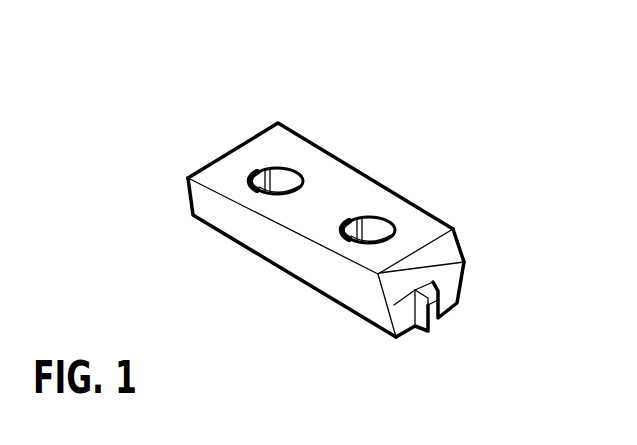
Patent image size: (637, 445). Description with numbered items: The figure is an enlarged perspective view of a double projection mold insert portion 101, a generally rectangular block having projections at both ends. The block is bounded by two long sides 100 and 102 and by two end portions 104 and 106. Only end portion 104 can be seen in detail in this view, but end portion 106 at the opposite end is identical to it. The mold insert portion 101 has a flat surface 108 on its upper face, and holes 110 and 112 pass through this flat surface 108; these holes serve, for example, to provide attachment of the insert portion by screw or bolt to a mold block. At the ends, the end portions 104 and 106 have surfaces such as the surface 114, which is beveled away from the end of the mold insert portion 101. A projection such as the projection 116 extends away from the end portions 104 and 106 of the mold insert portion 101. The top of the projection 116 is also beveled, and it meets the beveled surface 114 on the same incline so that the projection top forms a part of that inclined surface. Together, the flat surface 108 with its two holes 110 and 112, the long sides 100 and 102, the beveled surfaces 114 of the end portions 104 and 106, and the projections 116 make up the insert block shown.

The long side 100 is at (375, 185).
The double projection mold insert portion 101 is at (411, 190).
The long side 102 is at (315, 270).
The end portion 104 is at (468, 279).
The end portion 106 is at (217, 151).
The flat surface 108 is at (323, 173).
The hole 110 is at (280, 190).
The hole 112 is at (374, 244).
The beveled surface 114 is at (442, 255).
The projection 116 is at (440, 318).